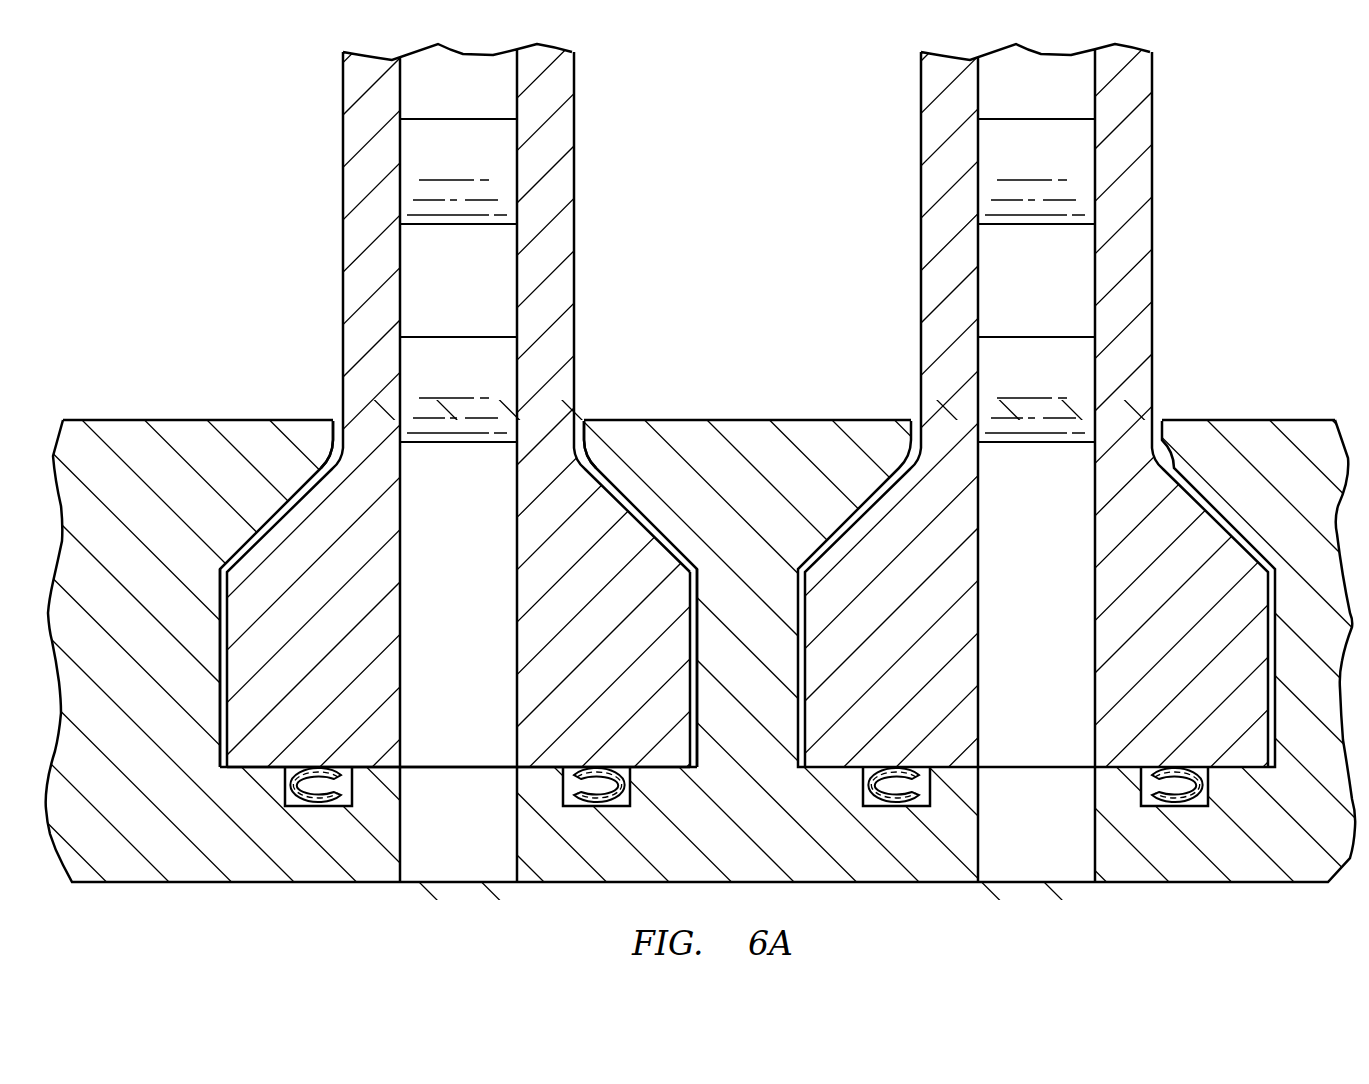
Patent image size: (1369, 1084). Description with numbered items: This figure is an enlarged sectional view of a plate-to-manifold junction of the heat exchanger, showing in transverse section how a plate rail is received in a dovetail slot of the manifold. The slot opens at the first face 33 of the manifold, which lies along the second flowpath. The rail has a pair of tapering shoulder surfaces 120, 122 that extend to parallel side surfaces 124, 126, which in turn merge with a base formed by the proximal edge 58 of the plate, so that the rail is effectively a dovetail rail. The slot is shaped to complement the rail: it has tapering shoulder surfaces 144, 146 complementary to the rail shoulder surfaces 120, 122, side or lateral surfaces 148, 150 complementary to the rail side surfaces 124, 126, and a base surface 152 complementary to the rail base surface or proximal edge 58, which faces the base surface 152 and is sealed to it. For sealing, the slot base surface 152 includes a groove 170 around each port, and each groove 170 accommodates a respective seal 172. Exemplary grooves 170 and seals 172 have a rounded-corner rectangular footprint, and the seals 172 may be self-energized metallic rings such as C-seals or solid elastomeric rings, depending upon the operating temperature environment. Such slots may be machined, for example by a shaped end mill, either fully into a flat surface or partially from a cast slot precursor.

The first face 33 is at (213, 420).
The proximal edge 58 is at (262, 775).
The tapering shoulder surface 120 is at (298, 492).
The tapering shoulder surface 122 is at (628, 497).
The side surface 124 is at (221, 665).
The side surface 126 is at (698, 660).
The tapering shoulder surface 144 is at (308, 487).
The tapering shoulder surface 146 is at (598, 484).
The side surface 148 is at (227, 638).
The side surface 150 is at (690, 628).
The base surface 152 is at (268, 778).
The groove 170 is at (345, 808).
The seal 172 is at (595, 807).